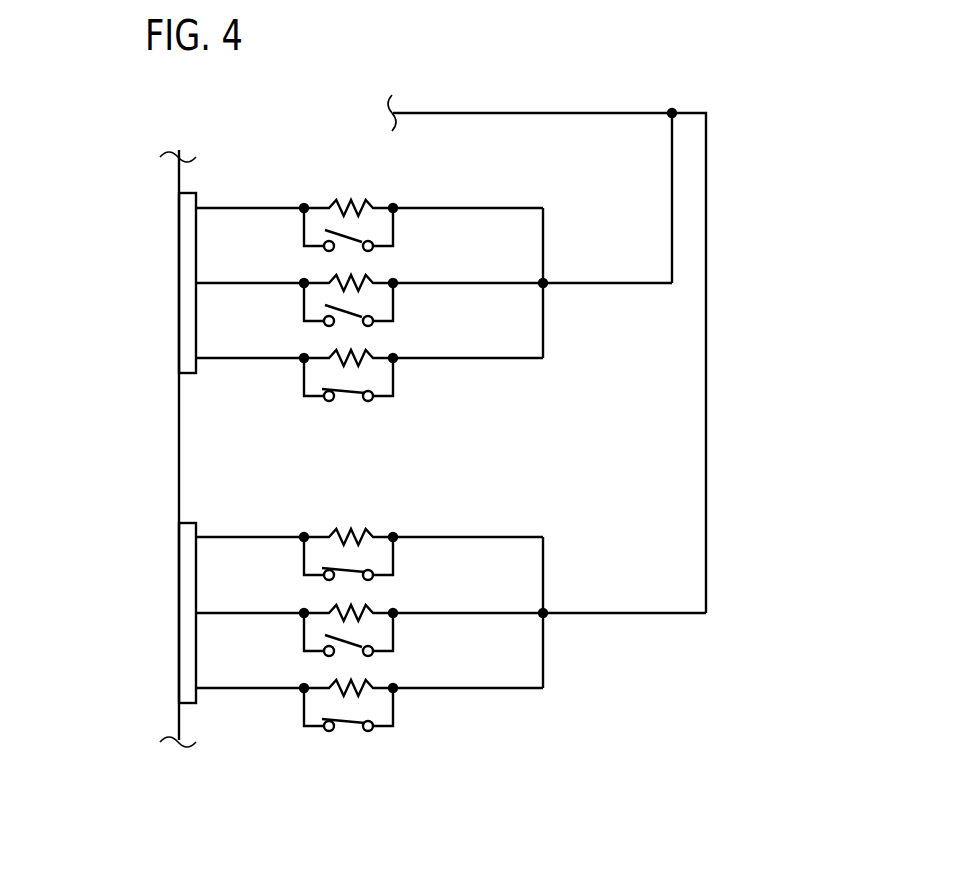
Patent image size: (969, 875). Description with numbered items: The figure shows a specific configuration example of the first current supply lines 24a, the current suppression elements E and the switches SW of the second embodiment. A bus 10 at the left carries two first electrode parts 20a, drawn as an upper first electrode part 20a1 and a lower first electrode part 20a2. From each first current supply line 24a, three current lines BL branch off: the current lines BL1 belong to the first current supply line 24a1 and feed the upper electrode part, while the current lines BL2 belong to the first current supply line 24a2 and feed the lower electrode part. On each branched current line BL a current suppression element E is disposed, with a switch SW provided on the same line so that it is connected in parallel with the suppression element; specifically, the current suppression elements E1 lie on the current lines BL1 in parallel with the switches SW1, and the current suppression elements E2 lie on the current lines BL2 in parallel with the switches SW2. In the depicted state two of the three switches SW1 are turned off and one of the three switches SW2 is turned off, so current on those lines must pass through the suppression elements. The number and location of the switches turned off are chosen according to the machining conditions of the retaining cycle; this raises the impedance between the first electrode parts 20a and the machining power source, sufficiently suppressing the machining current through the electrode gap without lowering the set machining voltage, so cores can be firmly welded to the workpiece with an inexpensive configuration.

The battery module / cell stack 10 is at (178, 431).
The first electrode part 20a is at (120, 448).
The first electrode terminal 20a1 is at (186, 242).
The second electrode terminal 20a2 is at (186, 572).
The current suppression element E is at (369, 433).
The current suppression element E1 is at (328, 204).
The current suppression element E2 is at (328, 533).
The switch SW is at (408, 481).
The switch SW1 is at (394, 260).
The switch SW2 is at (394, 589).
The current line BL is at (616, 449).
The current line BL1 is at (527, 207).
The current line BL2 is at (527, 536).
The first current supply line 24a is at (620, 354).
The first current supply line 24a1 is at (690, 177).
The first current supply line 24a2 is at (722, 551).